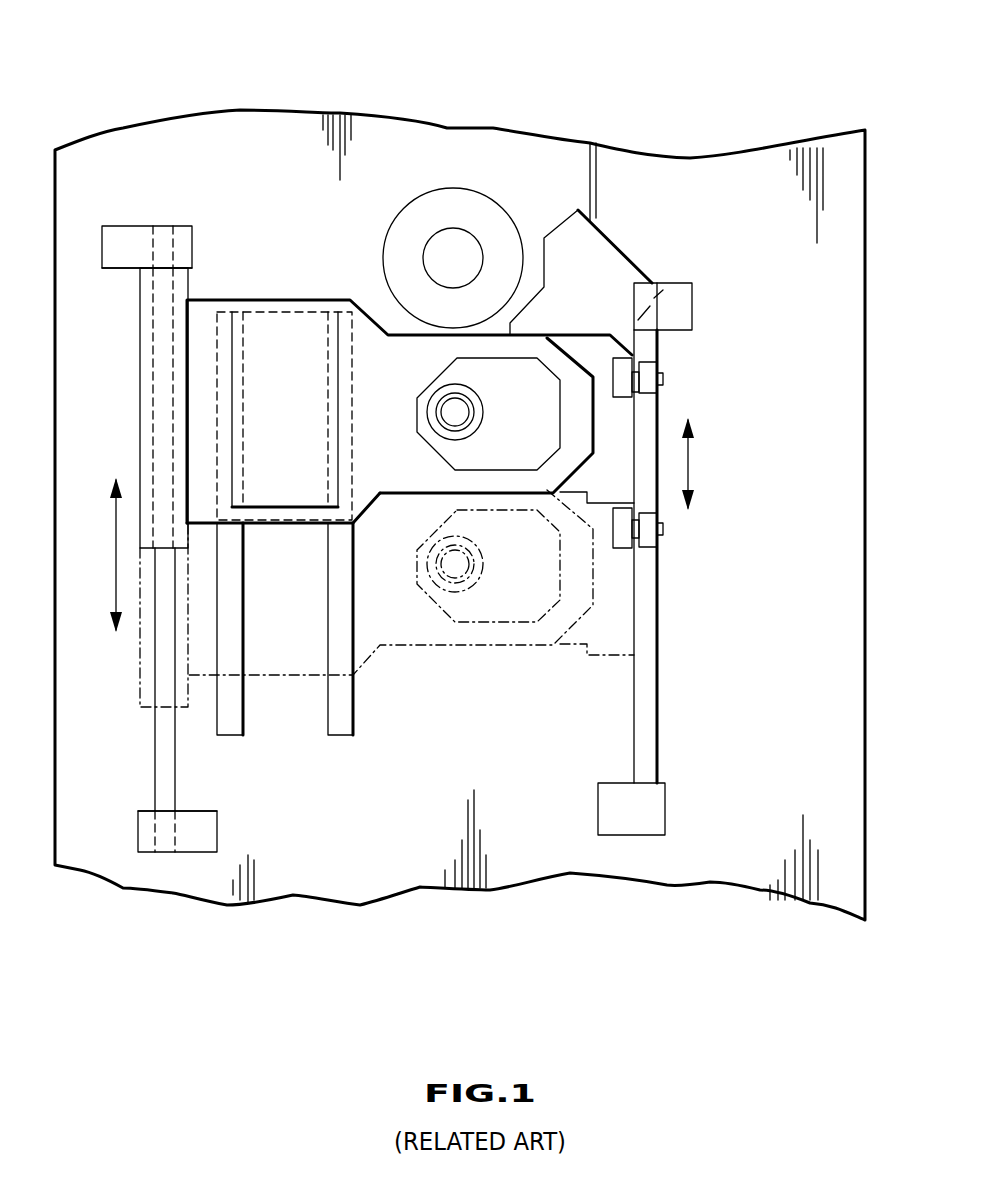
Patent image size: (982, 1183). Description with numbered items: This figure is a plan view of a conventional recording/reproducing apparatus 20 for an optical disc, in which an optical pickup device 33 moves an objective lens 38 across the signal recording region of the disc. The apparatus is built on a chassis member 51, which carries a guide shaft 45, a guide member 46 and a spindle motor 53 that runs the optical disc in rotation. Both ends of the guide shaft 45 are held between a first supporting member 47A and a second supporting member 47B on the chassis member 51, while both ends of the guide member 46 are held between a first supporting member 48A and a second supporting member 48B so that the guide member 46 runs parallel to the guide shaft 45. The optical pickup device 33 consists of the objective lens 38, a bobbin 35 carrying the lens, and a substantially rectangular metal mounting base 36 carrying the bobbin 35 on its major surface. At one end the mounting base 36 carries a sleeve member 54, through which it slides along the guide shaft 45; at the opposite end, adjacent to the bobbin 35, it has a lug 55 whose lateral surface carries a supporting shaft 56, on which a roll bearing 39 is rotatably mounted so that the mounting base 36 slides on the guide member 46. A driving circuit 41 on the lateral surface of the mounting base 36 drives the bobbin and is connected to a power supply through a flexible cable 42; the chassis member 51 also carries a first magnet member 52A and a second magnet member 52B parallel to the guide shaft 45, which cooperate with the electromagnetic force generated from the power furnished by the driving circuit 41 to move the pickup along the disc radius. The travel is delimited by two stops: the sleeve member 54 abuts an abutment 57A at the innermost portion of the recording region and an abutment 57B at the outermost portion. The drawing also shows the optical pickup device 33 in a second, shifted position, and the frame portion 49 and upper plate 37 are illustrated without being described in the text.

The recording/reproducing apparatus 20 is at (636, 105).
The chassis member 51 is at (742, 170).
The second supporting member 47B is at (128, 232).
The abutment 57A is at (117, 268).
The sleeve member 54 is at (147, 382).
The guide shaft 45 is at (168, 772).
The first supporting member 47A is at (210, 822).
The abutment 57B is at (153, 811).
The frame member 49 is at (282, 325).
The upper plate 37 is at (405, 333).
The mounting base 36 is at (397, 482).
The bobbin 35 is at (503, 457).
The objective lens 38 is at (455, 407).
The spindle motor 53 is at (497, 217).
The flexible cable 42 is at (598, 190).
The driving circuit 41 is at (597, 248).
The second supporting member 48B is at (685, 310).
The guide member 46 is at (650, 717).
The first supporting member 48A is at (652, 815).
The lug 55 is at (622, 387).
The roll bearing 39 is at (657, 368).
The supporting shaft 56 is at (662, 380).
The first magnet member 52A is at (240, 718).
The second magnet member 52B is at (347, 713).
The optical pickup device 33 is at (391, 565).